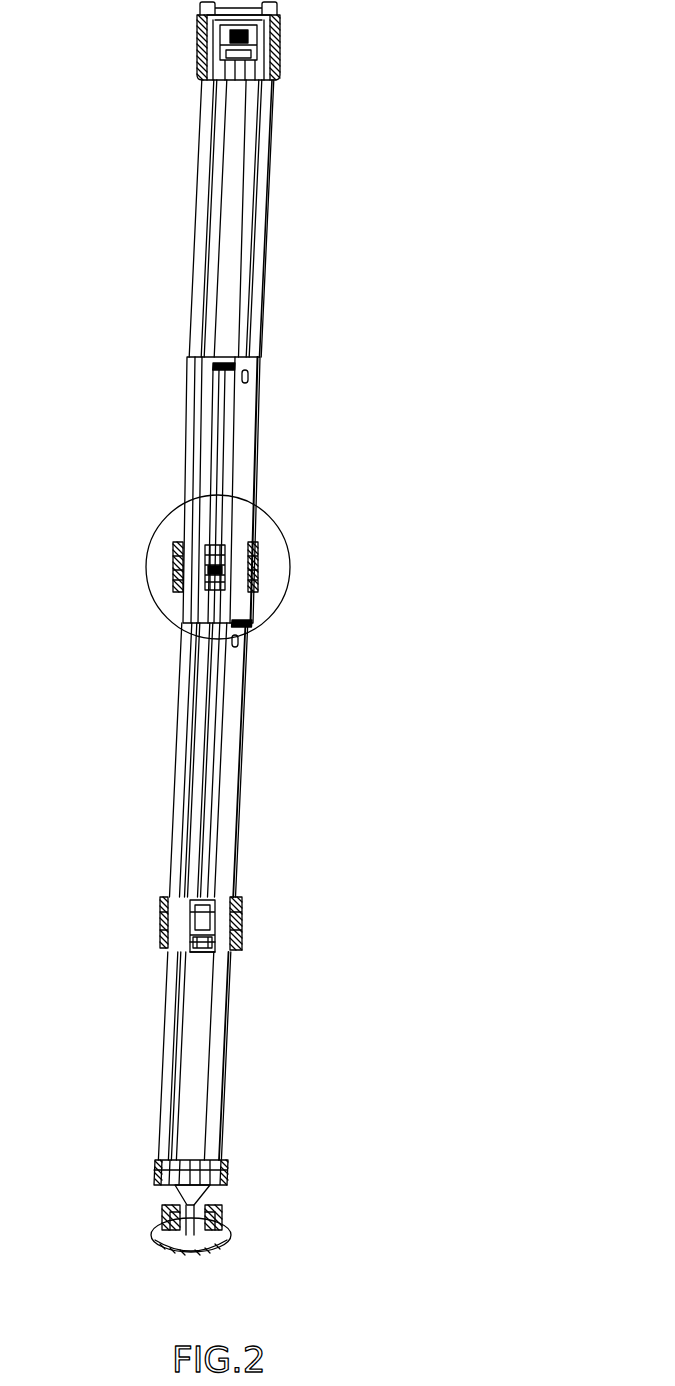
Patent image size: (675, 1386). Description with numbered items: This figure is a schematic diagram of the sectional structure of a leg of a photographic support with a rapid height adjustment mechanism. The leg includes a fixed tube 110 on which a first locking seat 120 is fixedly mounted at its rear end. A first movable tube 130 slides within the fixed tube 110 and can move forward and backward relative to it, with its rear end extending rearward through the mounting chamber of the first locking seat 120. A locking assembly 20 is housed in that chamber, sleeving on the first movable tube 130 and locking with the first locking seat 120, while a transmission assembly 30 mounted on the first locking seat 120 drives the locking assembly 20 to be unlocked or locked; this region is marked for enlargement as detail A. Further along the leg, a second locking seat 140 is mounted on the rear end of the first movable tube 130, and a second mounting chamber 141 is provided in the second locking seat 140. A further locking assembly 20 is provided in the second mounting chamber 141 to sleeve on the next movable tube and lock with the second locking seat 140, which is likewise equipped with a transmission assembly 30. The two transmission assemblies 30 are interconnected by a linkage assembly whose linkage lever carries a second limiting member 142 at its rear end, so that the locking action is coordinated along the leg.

The fixed tube 110 is at (258, 457).
The detail region A is at (272, 515).
The first locking seat 120 is at (258, 557).
The first movable tube 130 is at (248, 617).
The second locking seat 140 is at (242, 910).
The second mounting chamber 141 is at (242, 945).
The second limiting member 142 is at (205, 955).
The locking assembly 20 is at (163, 930).
The transmission assembly 30 is at (200, 925).